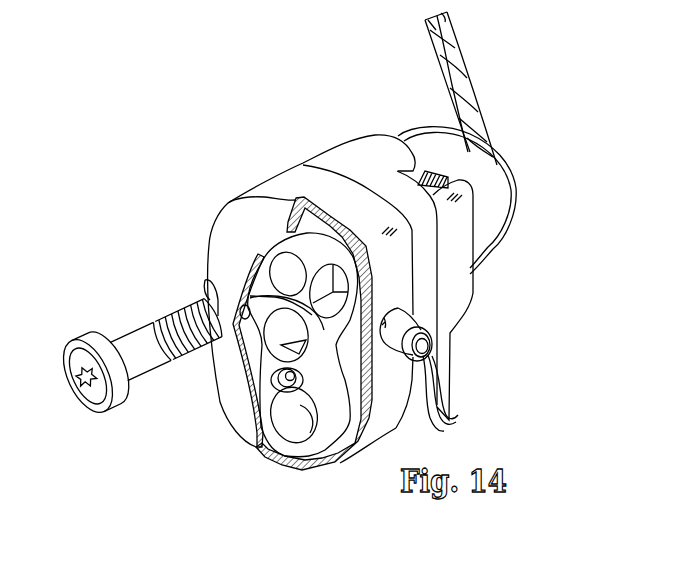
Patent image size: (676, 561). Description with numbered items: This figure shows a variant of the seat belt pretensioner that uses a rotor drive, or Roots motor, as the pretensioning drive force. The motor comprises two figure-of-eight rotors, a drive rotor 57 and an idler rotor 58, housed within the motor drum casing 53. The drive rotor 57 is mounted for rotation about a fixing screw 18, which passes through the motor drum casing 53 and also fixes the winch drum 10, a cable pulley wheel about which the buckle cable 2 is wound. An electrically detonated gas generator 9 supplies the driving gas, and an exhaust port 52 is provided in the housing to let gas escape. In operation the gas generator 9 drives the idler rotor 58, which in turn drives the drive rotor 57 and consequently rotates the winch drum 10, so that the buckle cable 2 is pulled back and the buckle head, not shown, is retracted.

The buckle cable 2 is at (468, 77).
The gas generator 9 is at (421, 343).
The winch drum 10 is at (491, 248).
The fixing screw 18 is at (142, 360).
The exhaust port 52 is at (203, 290).
The motor drum casing 53 is at (462, 293).
The drive rotor 57 is at (265, 268).
The idler rotor 58 is at (272, 427).